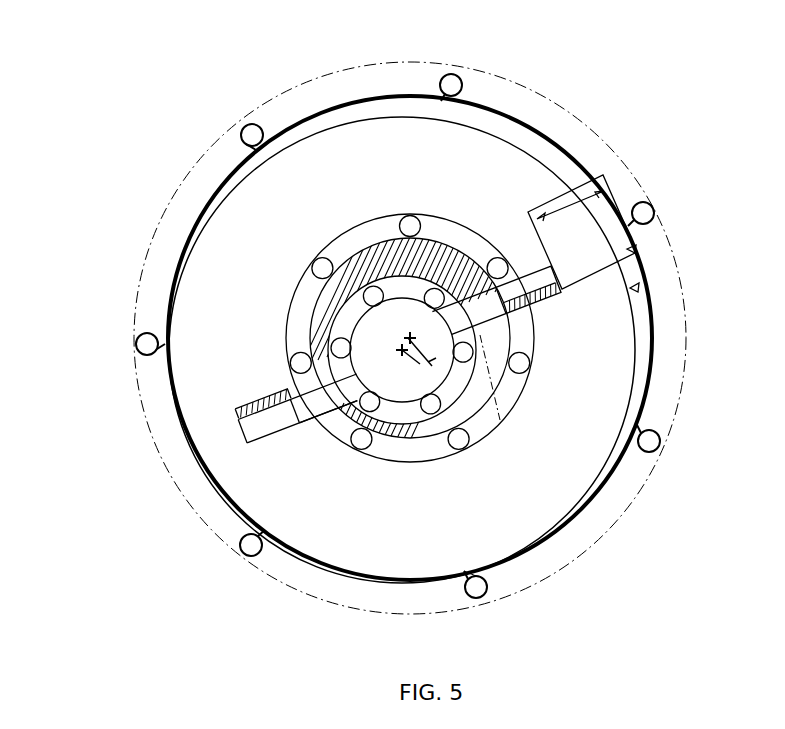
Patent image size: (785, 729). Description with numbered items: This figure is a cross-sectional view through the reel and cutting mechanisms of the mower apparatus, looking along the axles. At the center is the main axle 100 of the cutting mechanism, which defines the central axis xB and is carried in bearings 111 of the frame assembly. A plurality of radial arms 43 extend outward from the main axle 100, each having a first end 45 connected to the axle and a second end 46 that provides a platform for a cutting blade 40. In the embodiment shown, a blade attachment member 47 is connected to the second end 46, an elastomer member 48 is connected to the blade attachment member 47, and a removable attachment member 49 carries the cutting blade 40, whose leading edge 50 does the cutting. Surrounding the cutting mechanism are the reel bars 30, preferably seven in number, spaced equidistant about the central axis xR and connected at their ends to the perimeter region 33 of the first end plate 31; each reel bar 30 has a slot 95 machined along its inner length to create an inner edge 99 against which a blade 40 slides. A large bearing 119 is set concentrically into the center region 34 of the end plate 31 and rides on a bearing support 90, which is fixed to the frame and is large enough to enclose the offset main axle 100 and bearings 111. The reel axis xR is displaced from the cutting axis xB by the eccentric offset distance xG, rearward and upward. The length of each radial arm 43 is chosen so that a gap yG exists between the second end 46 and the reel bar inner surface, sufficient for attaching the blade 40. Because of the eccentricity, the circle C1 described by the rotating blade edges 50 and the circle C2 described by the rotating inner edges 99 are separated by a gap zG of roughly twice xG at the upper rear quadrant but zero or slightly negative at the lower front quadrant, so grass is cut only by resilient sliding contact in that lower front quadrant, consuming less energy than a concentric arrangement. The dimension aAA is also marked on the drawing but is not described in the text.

The reel bars 30 is at (245, 128).
The first end plate 31 is at (590, 178).
The perimeter region 33 is at (547, 132).
The center region 34 is at (432, 197).
The cutting blades 40 is at (237, 427).
The radial arms 43 is at (297, 420).
The first end 45 is at (345, 326).
The second end 46 is at (378, 405).
The blade attachment member 47 is at (322, 393).
The elastomer member 48 is at (558, 300).
The removable attachment member 49 is at (240, 394).
The leading edge 50 is at (248, 440).
The bearing support 90 is at (507, 352).
The slot 95 is at (440, 93).
The inner edges 99 is at (488, 590).
The main axle 100 is at (392, 400).
The bearings 111 is at (447, 395).
The bearings 119 is at (345, 226).
The circle described by rotation of the blade edges C1 is at (630, 415).
The circle described by rotation of the inner reel bar edges C2 is at (588, 507).
The central axis of the reel mechanism xR is at (406, 337).
The central axis of the cutting mechanism xB is at (400, 349).
The eccentric offset distance xG is at (437, 392).
The gap yG is at (606, 190).
The gap between circles C1 and C2 zG is at (627, 249).
The dimension aAA is at (630, 288).